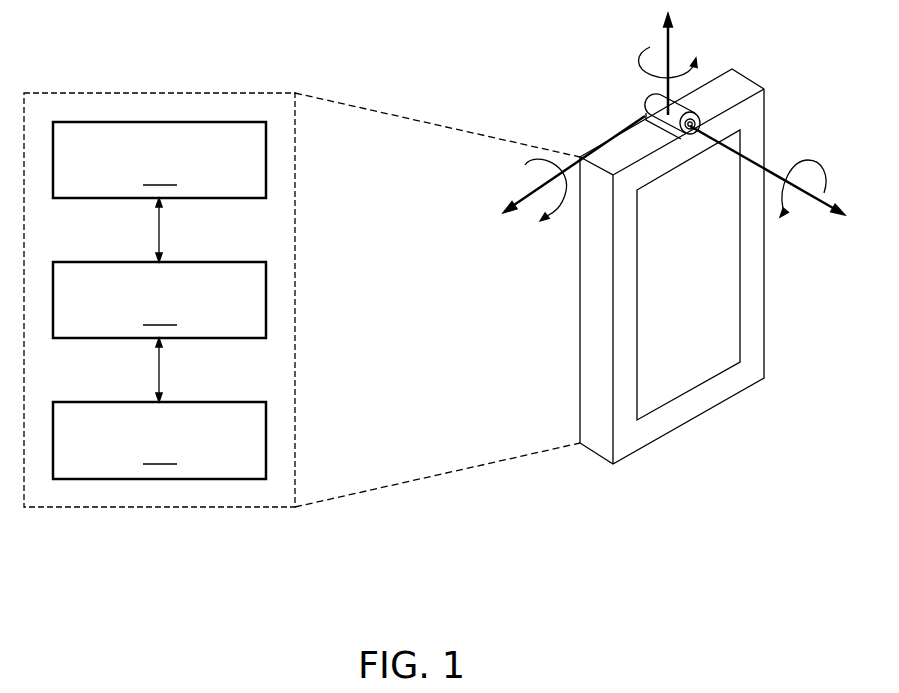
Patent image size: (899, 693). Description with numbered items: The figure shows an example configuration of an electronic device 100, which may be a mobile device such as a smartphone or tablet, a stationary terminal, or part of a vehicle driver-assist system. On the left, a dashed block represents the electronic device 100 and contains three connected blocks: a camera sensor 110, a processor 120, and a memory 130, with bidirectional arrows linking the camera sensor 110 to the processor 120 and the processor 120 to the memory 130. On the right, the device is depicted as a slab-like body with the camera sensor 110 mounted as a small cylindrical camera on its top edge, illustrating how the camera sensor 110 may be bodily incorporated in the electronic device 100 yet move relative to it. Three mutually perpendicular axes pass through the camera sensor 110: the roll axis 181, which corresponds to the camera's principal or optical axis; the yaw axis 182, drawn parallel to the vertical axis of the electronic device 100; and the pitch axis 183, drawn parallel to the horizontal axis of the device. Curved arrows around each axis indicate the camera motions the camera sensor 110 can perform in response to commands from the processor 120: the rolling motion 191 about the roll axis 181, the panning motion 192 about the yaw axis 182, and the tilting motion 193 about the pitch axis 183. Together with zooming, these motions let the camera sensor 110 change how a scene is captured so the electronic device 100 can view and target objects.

The electronic device 100 is at (220, 93).
The camera sensor 110 is at (648, 101).
The processor 120 is at (159, 300).
The memory 130 is at (159, 440).
The roll axis 181 is at (820, 205).
The yaw axis 182 is at (672, 43).
The pitch axis 183 is at (530, 205).
The rolling motion 191 is at (803, 163).
The panning motion 192 is at (640, 58).
The tilting motion 193 is at (524, 161).